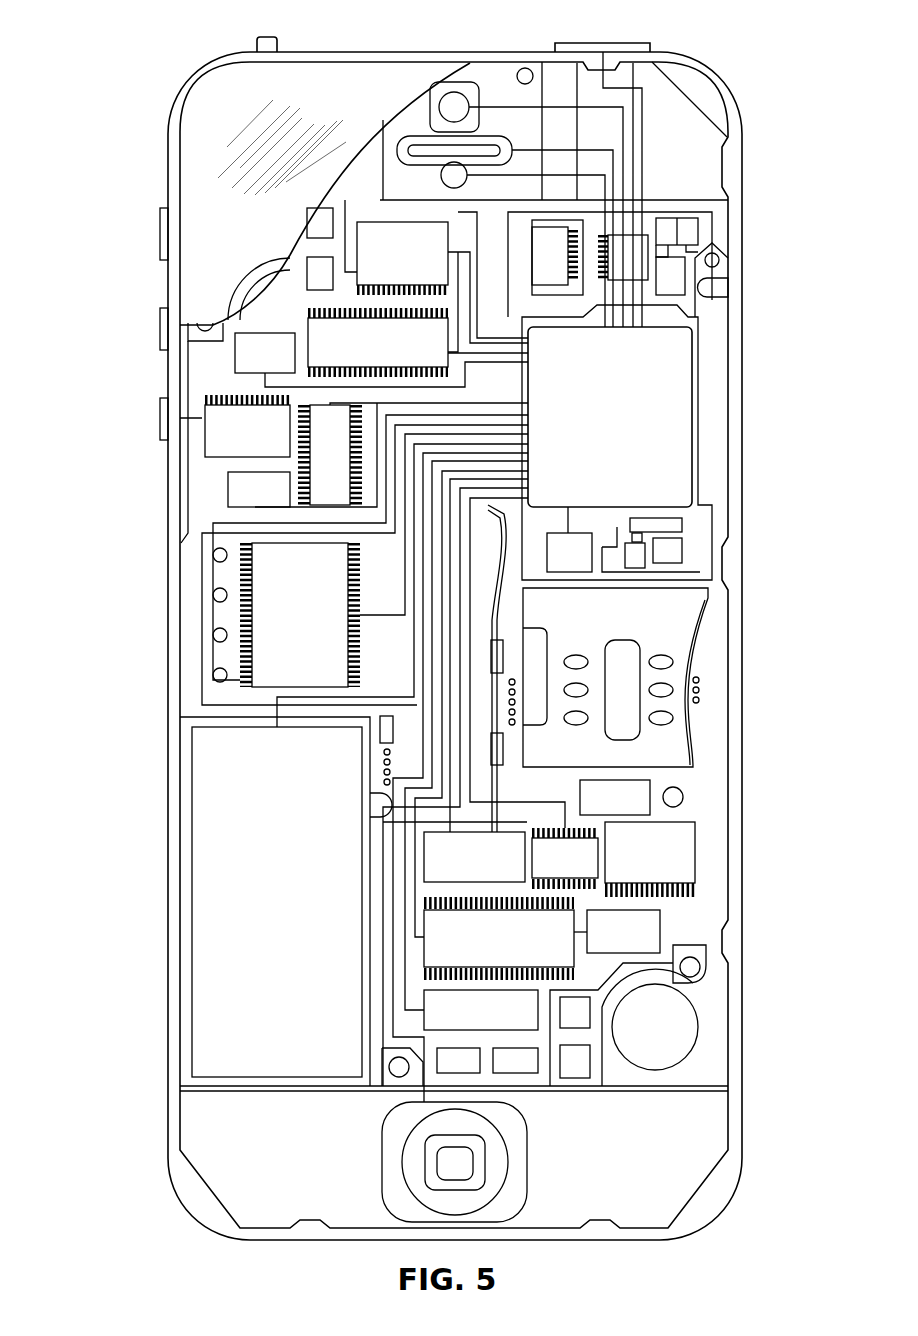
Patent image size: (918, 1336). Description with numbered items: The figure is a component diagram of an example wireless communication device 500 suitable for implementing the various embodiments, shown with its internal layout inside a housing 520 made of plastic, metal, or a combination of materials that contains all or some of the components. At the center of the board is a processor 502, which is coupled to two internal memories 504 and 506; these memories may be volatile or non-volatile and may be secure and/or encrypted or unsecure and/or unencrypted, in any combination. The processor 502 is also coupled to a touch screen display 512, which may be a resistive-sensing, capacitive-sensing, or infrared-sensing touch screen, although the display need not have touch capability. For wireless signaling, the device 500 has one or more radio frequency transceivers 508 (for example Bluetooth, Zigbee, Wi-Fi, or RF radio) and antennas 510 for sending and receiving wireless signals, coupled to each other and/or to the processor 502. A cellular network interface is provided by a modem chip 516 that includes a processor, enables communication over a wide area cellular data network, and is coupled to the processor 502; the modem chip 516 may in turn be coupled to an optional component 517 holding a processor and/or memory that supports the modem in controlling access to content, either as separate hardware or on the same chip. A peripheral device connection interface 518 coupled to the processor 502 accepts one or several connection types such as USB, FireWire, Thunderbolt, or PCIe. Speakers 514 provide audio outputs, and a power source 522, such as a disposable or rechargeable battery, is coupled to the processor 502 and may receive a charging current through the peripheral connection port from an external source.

The wireless communication device 500 is at (138, 68).
The processor 502 is at (446, 703).
The internal memory 504 is at (417, 276).
The internal memory 506 is at (381, 350).
The radio frequency (RF) transceiver 508 is at (648, 233).
The antenna 510 is at (690, 280).
The touch screen display 512 is at (195, 162).
The speaker 514 is at (413, 133).
The modem chip 516 is at (499, 938).
The optional component 517 is at (617, 931).
The peripheral device connection interface 518 is at (481, 1010).
The housing 520 is at (742, 1090).
The power source 522 is at (286, 901).